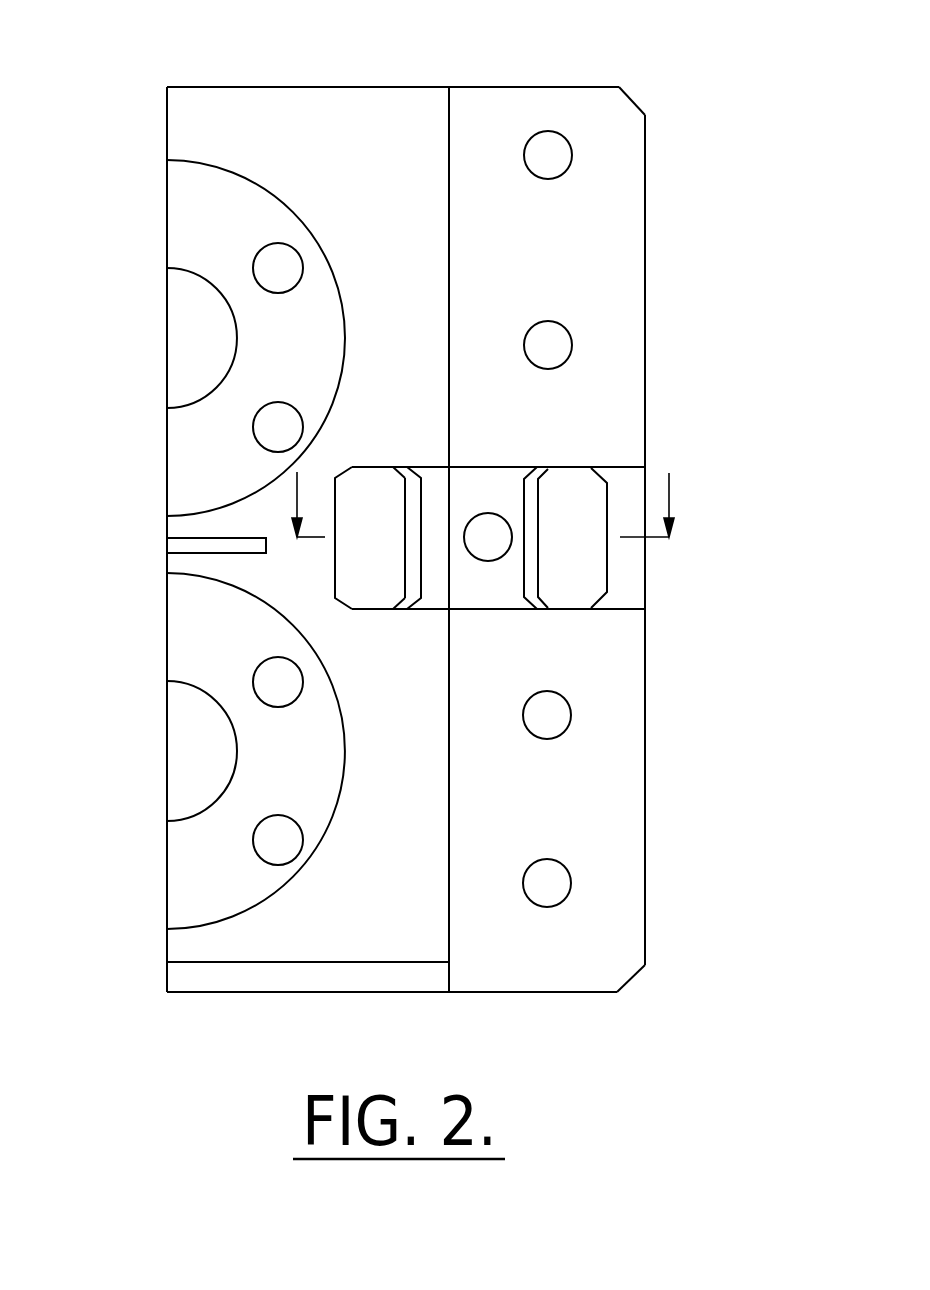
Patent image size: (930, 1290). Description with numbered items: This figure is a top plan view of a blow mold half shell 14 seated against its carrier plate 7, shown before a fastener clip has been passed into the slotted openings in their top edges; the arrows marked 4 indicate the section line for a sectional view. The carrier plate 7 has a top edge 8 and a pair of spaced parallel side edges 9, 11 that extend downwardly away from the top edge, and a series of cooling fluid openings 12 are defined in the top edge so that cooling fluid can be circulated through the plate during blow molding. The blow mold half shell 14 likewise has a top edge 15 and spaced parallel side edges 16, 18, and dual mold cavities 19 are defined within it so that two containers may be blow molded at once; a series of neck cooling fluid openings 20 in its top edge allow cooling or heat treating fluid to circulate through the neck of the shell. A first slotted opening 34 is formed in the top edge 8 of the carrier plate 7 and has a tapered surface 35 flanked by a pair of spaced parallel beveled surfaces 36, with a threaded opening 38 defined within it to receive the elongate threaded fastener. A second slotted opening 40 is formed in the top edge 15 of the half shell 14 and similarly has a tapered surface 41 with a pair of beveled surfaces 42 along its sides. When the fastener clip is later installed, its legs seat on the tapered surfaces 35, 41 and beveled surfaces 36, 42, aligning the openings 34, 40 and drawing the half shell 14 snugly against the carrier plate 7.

The section line 4- 4 is at (494, 495).
The carrier plate 7 is at (561, 531).
The top edge 8 is at (588, 531).
The side edge 9 is at (547, 1006).
The side edge 11 is at (547, 64).
The cooling fluid openings 12 is at (590, 461).
The blow mold half shell 14 is at (127, 535).
The top edge 15 is at (286, 523).
The side edge 16 is at (308, 1004).
The side edge 18 is at (308, 50).
The mold cavities 19 is at (165, 544).
The neck cooling fluid openings 20 is at (195, 533).
The first slotted opening 34 is at (647, 539).
The tapered surface 35 is at (569, 538).
The beveled surfaces 36 is at (567, 539).
The threaded opening 38 is at (504, 590).
The second slotted opening 40 is at (247, 539).
The tapered surface 41 is at (375, 538).
The beveled surfaces 42 is at (373, 539).